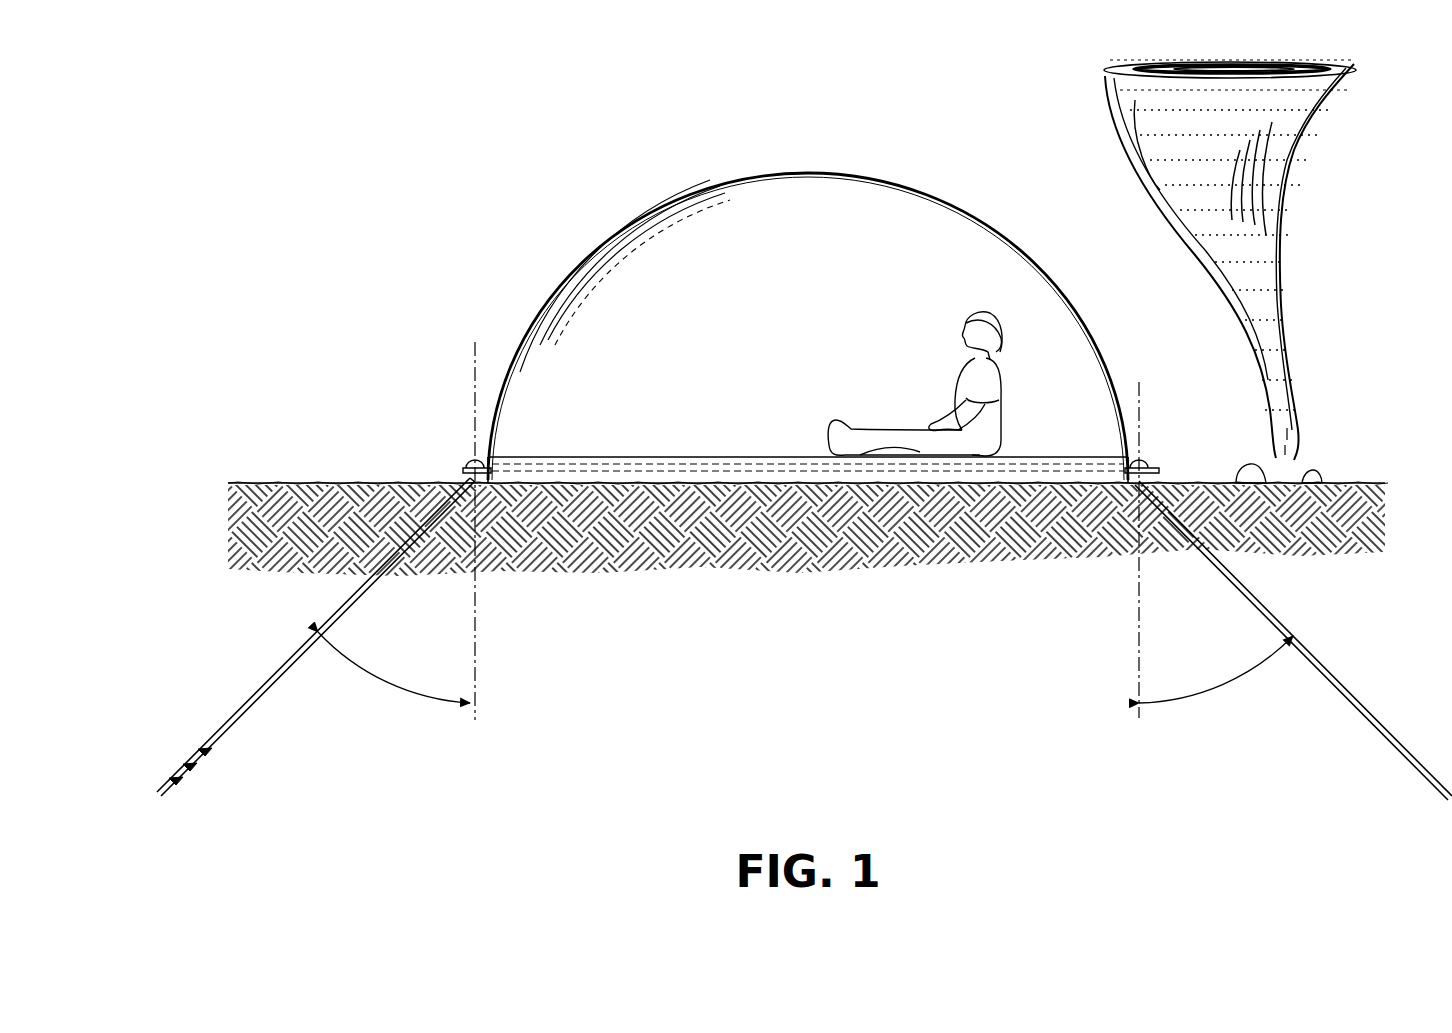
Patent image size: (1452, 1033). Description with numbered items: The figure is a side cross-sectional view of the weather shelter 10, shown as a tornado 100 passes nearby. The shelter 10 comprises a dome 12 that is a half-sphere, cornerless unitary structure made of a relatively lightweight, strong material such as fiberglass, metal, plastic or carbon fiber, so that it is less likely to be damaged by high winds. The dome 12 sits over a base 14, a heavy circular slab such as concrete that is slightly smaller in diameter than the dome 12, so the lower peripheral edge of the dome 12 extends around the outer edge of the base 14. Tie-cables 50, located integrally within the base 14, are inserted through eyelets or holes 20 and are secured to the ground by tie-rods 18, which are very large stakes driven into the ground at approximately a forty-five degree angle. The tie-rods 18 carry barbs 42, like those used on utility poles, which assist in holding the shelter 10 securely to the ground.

The weather shelter 10 is at (808, 309).
The dome 12 is at (701, 191).
The base 14 is at (585, 455).
The tie-rods 18 is at (263, 692).
The eyelets or holes 20 is at (488, 474).
The barbs 42 is at (196, 764).
The tie-cables 50 is at (463, 466).
The tornado 100 is at (1115, 133).